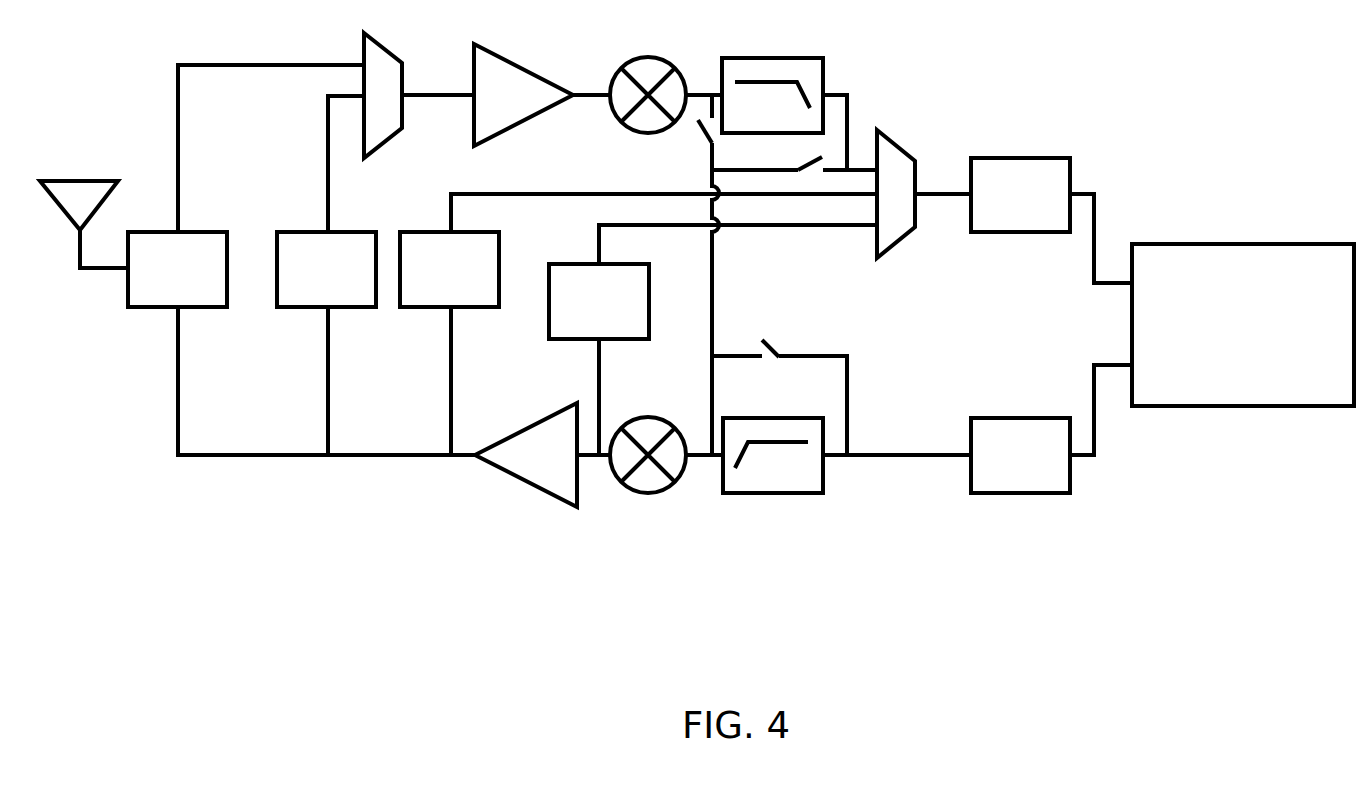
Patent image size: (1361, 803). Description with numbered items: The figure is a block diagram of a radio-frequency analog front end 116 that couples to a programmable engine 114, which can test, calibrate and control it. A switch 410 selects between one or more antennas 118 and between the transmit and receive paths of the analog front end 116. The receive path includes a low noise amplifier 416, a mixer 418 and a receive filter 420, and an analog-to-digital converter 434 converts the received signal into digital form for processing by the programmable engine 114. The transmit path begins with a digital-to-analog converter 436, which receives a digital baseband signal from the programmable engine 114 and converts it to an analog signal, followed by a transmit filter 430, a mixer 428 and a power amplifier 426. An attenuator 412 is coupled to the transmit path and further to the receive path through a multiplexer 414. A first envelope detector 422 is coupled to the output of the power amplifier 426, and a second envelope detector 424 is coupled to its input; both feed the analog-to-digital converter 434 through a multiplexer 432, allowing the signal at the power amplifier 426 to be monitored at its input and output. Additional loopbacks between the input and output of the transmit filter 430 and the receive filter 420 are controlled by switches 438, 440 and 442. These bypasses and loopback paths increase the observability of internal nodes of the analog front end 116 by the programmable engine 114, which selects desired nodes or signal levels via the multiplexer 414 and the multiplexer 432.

The programmable engine 114 is at (1300, 244).
The analog front end 116 is at (244, 502).
The antenna 118 is at (80, 180).
The switch 410 is at (200, 232).
The attenuator 412 is at (300, 307).
The multiplexer 414 is at (386, 47).
The low noise amplifier 416 is at (500, 56).
The mixer 418 is at (648, 57).
The filter 420 is at (773, 58).
The envelope detector 422 is at (424, 307).
The envelope detector 424 is at (649, 283).
The power amplifier 426 is at (551, 416).
The mixer 428 is at (648, 417).
The filter 430 is at (773, 418).
The multiplexer 432 is at (897, 146).
The analog-to-digital converter 434 is at (995, 232).
The digital-to-analog converter 436 is at (995, 418).
The switch 438 is at (779, 392).
The switch 440 is at (691, 275).
The switch 442 is at (794, 160).